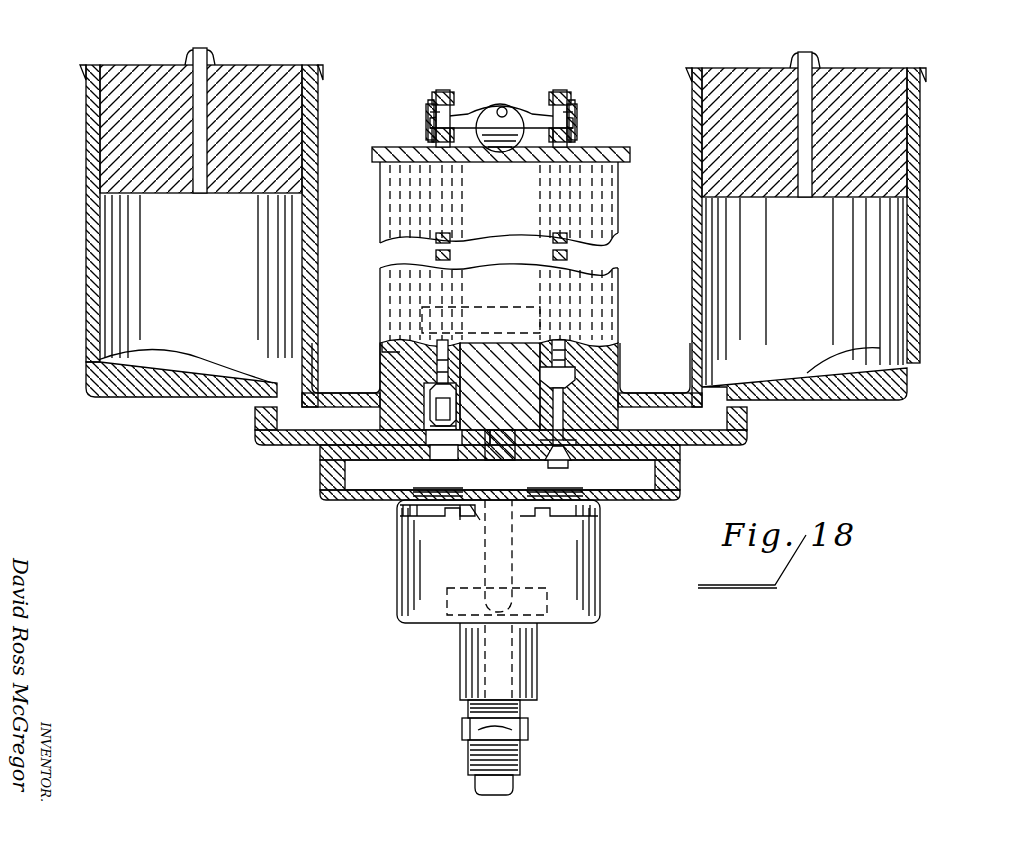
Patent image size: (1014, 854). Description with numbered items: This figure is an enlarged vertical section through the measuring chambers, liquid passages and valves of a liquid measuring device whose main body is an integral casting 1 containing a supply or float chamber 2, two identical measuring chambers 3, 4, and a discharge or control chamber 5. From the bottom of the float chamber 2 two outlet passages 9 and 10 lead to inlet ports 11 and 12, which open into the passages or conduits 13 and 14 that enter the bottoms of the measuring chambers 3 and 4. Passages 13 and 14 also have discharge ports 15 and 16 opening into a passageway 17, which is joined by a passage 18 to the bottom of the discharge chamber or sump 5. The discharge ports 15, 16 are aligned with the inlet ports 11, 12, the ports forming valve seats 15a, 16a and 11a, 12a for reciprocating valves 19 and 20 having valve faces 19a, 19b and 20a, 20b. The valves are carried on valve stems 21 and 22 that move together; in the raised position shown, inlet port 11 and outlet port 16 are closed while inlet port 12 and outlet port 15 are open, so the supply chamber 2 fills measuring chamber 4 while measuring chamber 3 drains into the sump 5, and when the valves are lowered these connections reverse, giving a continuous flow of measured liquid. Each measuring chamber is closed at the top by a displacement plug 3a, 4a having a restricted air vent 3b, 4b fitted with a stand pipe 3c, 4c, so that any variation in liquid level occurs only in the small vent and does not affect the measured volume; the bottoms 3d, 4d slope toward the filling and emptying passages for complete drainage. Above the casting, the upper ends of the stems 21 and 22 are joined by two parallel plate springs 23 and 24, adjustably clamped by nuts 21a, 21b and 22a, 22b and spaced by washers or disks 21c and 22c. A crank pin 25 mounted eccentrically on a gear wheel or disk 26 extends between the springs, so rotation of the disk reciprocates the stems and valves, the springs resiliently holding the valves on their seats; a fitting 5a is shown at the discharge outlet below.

The casting 1 is at (522, 358).
The supply or float chamber 2 is at (612, 296).
The measuring chamber 3 is at (135, 292).
The displacement plug 3a is at (113, 140).
The air vent 3b is at (200, 102).
The stand pipe 3c is at (211, 63).
The bottom of measuring chamber 3d is at (98, 360).
The measuring chamber 4 is at (872, 272).
The displacement plug 4a is at (893, 146).
The air vent 4b is at (806, 105).
The stand pipe 4c is at (795, 60).
The bottom of measuring chamber 4d is at (880, 348).
The discharge or control chamber 5 is at (580, 581).
The outlet fitting nut 5a is at (525, 752).
The outlet passage 9 is at (410, 346).
The outlet passage 10 is at (565, 354).
The inlet port 11 is at (434, 380).
The valve seat 11a is at (480, 345).
The inlet port 12 is at (578, 392).
The valve seat 12a is at (541, 414).
The passage or conduit 13 is at (330, 432).
The passage or conduit 14 is at (676, 432).
The discharge port 15 is at (447, 448).
The valve seat 15a is at (500, 436).
The discharge port 16 is at (566, 452).
The valve seat 16a is at (570, 428).
The passageway 17 is at (622, 482).
The passage 18 is at (498, 549).
The reciprocating valve 19 is at (430, 400).
The valve face 19a is at (460, 345).
The valve face 19b is at (456, 424).
The reciprocating valve 20 is at (460, 526).
The valve face 20a is at (566, 390).
The valve face 20b is at (540, 456).
The valve stem 21 is at (440, 100).
The nut 21a is at (430, 116).
The nut 21b is at (430, 132).
The spacing washer or disk 21c is at (432, 112).
The valve stem 22 is at (566, 96).
The nut 22a is at (573, 118).
The nut 22b is at (576, 132).
The spacing washer or disk 22c is at (576, 124).
The resilient strip or plate spring 23 is at (466, 112).
The resilient strip or plate spring 24 is at (477, 114).
The crank pin 25 is at (503, 107).
The gear wheel or disk 26 is at (520, 132).